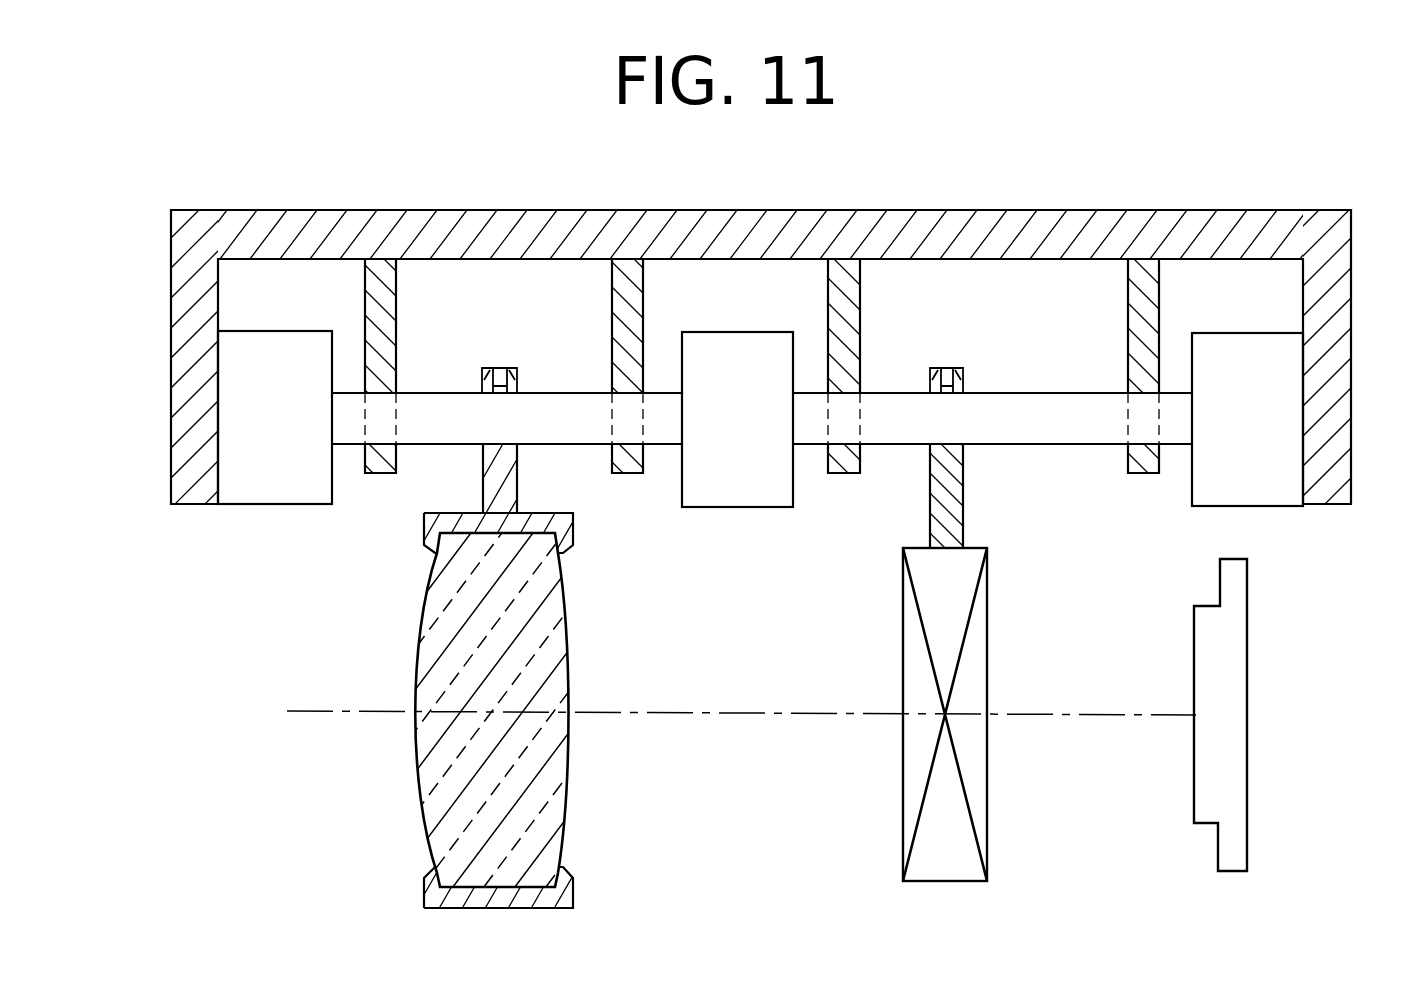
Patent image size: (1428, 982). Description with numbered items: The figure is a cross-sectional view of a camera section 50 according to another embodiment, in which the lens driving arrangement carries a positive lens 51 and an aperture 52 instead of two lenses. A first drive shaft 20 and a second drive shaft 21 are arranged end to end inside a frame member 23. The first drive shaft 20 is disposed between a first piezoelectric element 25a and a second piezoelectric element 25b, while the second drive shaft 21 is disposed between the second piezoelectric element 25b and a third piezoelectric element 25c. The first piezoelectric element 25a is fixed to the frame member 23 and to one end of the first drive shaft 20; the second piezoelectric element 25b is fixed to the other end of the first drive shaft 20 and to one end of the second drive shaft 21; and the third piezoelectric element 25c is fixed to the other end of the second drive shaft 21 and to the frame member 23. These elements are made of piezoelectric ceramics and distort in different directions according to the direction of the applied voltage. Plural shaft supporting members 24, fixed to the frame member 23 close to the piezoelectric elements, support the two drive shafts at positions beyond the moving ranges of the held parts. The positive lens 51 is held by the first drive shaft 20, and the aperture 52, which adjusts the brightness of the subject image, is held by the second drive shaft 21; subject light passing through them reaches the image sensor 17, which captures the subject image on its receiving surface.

The image sensor 17 is at (1227, 737).
The first drive shaft 20 is at (556, 408).
The second drive shaft 21 is at (1016, 410).
The frame member 23 is at (181, 396).
The shaft supporting member 24 is at (368, 304).
The first piezoelectric element 25a is at (277, 480).
The second piezoelectric element 25b is at (731, 480).
The third piezoelectric element 25c is at (1262, 493).
The camera section 50 is at (228, 783).
The positive lens 51 is at (443, 776).
The aperture 52 is at (925, 780).